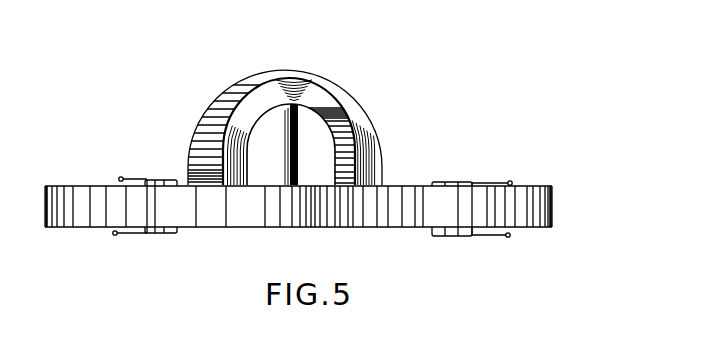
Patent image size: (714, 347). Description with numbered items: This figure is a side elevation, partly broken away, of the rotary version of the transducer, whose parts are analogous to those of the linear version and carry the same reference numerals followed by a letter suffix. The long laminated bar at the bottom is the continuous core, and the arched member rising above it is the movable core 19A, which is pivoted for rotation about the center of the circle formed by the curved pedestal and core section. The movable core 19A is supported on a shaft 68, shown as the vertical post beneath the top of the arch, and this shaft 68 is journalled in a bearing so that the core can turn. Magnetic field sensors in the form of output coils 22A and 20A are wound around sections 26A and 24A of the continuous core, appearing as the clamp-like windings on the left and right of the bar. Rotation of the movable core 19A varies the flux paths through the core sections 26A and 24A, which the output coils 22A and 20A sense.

The movable core 19A is at (337, 100).
The shaft 68 is at (298, 154).
The output coil 22A is at (155, 180).
The output coil 20A is at (457, 186).
The section of the core 24A is at (492, 218).
The section of the core 26A is at (175, 208).